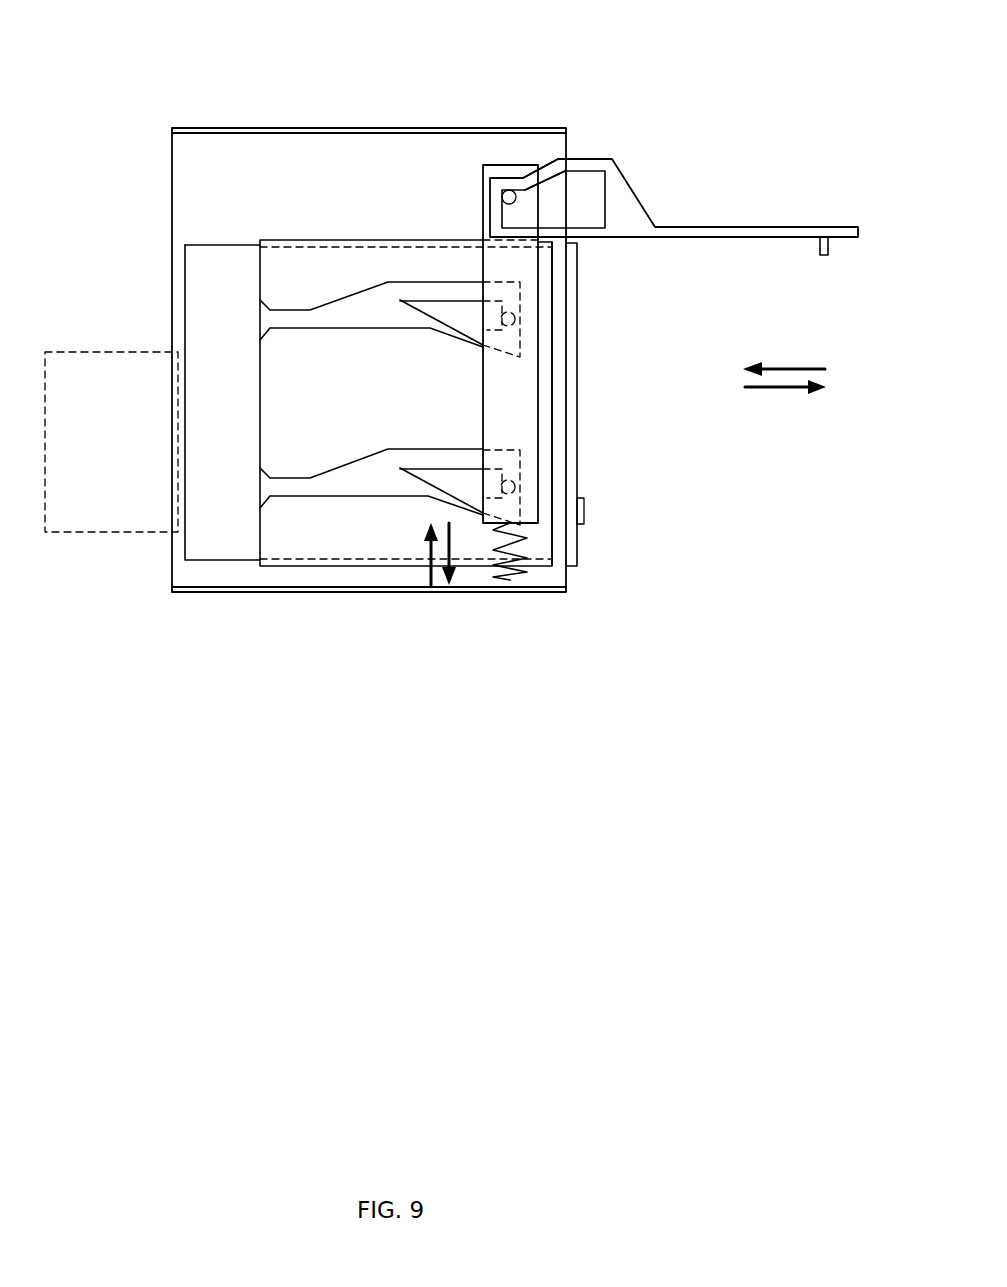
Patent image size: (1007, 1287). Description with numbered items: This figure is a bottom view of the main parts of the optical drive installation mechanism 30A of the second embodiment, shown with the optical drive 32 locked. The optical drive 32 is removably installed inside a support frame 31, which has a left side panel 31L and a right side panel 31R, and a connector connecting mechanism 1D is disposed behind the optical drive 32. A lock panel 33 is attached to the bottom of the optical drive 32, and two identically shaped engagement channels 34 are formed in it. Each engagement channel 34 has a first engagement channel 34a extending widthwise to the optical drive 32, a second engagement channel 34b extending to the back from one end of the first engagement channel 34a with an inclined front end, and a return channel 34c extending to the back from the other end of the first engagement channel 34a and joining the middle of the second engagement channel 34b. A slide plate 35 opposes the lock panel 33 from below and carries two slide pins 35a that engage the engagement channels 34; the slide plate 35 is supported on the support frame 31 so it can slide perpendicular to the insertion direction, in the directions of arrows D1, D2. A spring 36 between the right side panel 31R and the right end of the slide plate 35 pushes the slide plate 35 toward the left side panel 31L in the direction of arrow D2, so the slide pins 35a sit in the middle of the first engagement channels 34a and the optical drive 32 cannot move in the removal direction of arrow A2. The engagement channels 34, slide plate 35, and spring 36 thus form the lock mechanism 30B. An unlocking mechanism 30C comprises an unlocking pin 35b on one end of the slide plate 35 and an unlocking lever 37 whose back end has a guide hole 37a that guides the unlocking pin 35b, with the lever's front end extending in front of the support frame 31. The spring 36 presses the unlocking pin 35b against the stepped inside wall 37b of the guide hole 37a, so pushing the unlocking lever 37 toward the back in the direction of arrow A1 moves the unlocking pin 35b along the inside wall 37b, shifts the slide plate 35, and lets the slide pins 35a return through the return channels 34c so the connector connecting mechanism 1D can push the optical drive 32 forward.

The connector connecting mechanism 1D is at (118, 535).
The optical drive installation mechanism 30A is at (186, 92).
The lock mechanism 30B is at (586, 592).
The unlocking mechanism 30C is at (605, 93).
The support frame 31 is at (340, 118).
The left side panel 31L is at (405, 127).
The right side panel 31R is at (295, 593).
The optical drive 32 is at (578, 468).
The lock panel 33 is at (298, 240).
The engagement channel 34 is at (380, 397).
The first engagement channel 34a is at (520, 298).
The second engagement channel 34b is at (370, 328).
The return channel 34c is at (430, 281).
The slide plate 35 is at (599, 325).
The slide pin 35a is at (515, 484).
The unlocking pin 35b is at (510, 190).
The spring 36 is at (517, 579).
The unlocking lever 37 is at (674, 185).
The guide hole 37a is at (600, 208).
The inside wall 37b is at (555, 183).
The direction of arrow A1 is at (790, 369).
The direction of arrow A2 is at (778, 390).
The direction of arrow D1 is at (451, 545).
The direction of arrow D2 is at (432, 545).